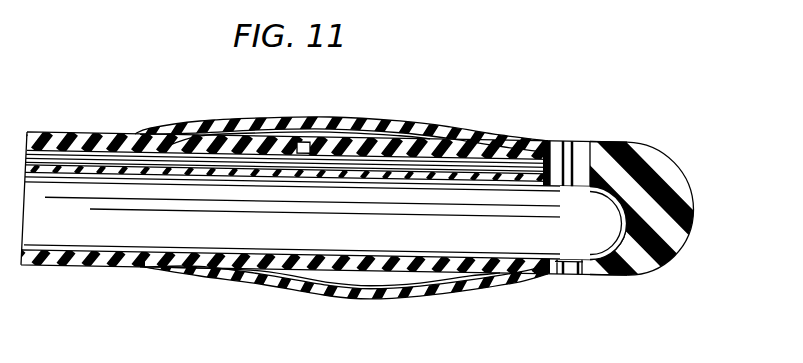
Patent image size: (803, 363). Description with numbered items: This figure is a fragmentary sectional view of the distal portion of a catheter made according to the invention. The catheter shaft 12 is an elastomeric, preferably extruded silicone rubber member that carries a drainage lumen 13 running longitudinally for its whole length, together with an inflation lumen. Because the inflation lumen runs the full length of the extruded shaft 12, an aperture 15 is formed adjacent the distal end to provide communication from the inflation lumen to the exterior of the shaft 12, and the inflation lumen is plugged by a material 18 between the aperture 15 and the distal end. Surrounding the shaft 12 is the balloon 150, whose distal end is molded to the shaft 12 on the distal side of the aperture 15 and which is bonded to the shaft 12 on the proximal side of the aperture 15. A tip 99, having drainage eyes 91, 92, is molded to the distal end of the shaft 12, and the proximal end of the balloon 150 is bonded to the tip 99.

The catheter shaft 12 is at (47, 263).
The drainage lumen 13 is at (151, 240).
The aperture 15 is at (301, 152).
The plugging material 18 is at (392, 158).
The drainage eye 91 is at (572, 274).
The drainage eye 92 is at (562, 143).
The tip 99 is at (664, 270).
The balloon 150 is at (264, 88).